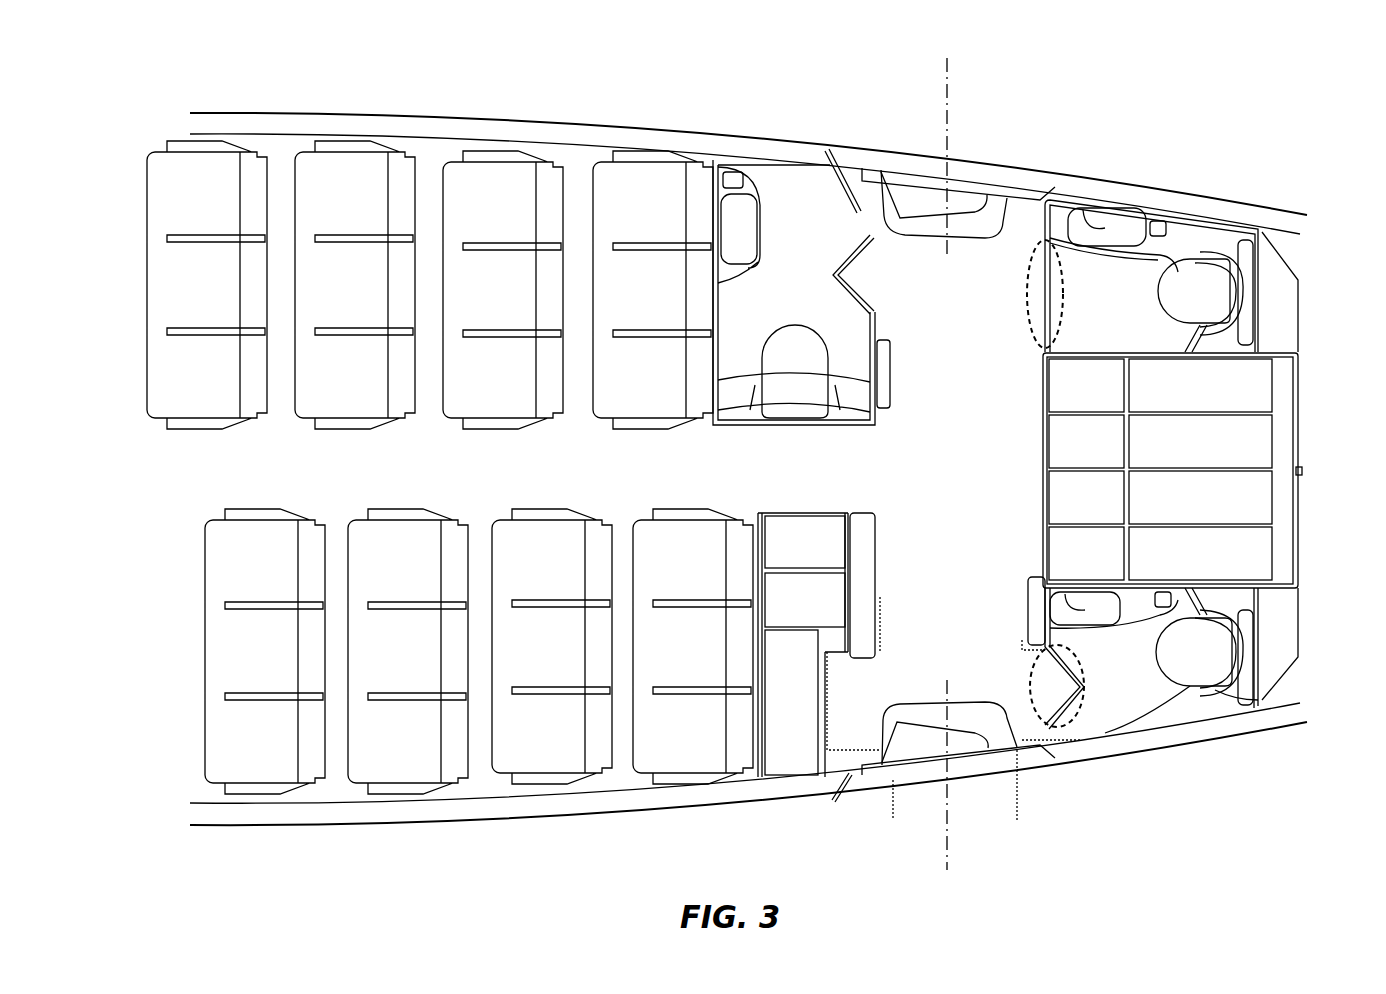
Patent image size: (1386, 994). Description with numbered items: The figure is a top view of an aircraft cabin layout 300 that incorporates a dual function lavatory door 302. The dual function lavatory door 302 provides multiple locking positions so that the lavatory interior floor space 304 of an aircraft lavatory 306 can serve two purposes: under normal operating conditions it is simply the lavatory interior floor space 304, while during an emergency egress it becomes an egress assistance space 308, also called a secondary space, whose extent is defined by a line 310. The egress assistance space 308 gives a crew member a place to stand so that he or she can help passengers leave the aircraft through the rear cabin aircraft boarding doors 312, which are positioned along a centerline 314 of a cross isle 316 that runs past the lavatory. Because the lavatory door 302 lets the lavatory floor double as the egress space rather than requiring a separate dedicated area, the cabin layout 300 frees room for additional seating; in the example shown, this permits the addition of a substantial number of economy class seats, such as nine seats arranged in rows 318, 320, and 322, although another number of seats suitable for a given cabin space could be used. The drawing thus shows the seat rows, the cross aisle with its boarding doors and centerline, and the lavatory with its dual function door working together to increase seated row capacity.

The aircraft cabin layout 300 is at (1150, 64).
The dual function lavatory door 302 is at (1028, 292).
The lavatory interior floor space 304 is at (1103, 290).
The aircraft lavatory 306 is at (1262, 290).
The egress assistance space 308 is at (1062, 685).
The line 310 is at (1077, 730).
The rear cabin aircraft boarding doors 312 is at (1003, 200).
The centerline 314 is at (942, 100).
The cross isle 316 is at (905, 480).
The row 318 is at (645, 160).
The row 320 is at (690, 775).
The row 322 is at (552, 775).